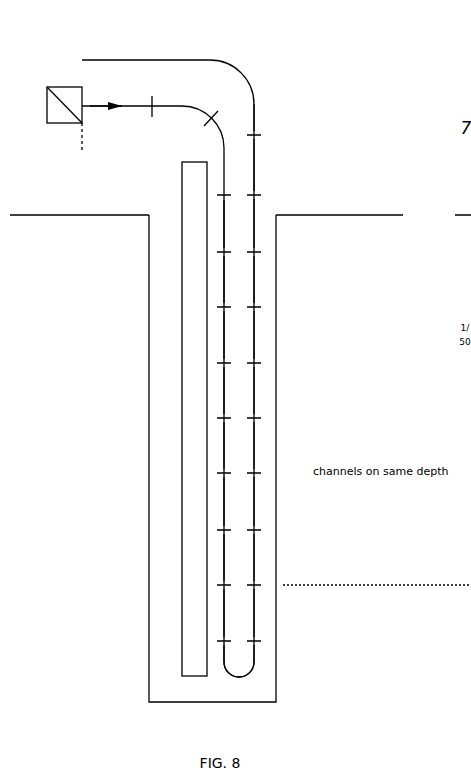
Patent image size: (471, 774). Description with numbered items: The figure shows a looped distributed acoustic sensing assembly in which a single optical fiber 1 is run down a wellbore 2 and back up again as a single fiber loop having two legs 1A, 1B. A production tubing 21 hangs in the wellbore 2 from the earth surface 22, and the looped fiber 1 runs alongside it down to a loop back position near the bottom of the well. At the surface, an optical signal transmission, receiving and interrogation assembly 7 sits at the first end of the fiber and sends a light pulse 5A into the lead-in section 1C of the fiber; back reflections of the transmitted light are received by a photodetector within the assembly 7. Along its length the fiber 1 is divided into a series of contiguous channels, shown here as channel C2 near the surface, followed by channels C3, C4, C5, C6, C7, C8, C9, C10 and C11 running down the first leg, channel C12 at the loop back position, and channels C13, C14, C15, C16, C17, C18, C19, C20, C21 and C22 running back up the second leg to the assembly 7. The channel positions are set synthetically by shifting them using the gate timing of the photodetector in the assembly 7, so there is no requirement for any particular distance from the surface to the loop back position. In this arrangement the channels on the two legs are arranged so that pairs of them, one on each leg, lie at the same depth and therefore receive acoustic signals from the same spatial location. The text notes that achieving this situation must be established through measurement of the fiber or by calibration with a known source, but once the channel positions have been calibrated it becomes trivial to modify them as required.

The optical fiber 1 is at (203, 373).
The fiber loop leg 1A is at (184, 105).
The fiber loop leg 1B is at (208, 58).
The channel 1C is at (135, 108).
The light pulse 5A is at (96, 106).
The optical signal transmission, receiving and interrogation assembly 7 is at (47, 109).
The wellbore 2 is at (155, 206).
The production tubing 21 is at (182, 170).
The earth surface 22 is at (48, 215).
The channel C2 is at (164, 118).
The channel C3 is at (224, 153).
The channel C4 is at (224, 225).
The channel C5 is at (224, 279).
The channel C6 is at (224, 335).
The channel C7 is at (224, 388).
The channel C8 is at (224, 443).
The channel C9 is at (224, 497).
The channel C10 is at (224, 558).
The channel C11 is at (224, 611).
The channel C12 is at (244, 678).
The channel C13 is at (255, 617).
The channel C14 is at (255, 558).
The channel C15 is at (255, 505).
The channel C16 is at (255, 452).
The channel C17 is at (255, 399).
The channel C18 is at (255, 345).
The channel C19 is at (255, 289).
The channel C20 is at (257, 220).
The channel C21 is at (255, 162).
The channel C22 is at (255, 119).